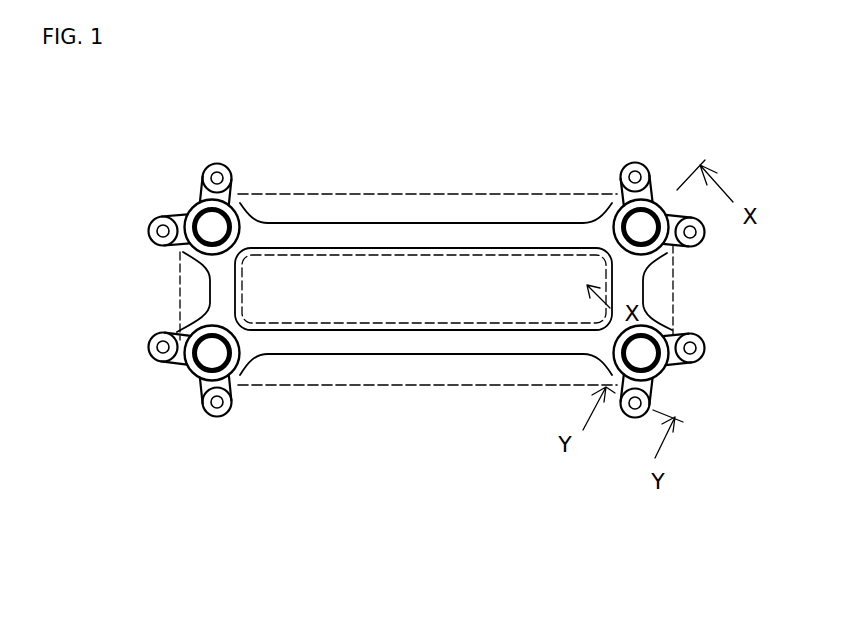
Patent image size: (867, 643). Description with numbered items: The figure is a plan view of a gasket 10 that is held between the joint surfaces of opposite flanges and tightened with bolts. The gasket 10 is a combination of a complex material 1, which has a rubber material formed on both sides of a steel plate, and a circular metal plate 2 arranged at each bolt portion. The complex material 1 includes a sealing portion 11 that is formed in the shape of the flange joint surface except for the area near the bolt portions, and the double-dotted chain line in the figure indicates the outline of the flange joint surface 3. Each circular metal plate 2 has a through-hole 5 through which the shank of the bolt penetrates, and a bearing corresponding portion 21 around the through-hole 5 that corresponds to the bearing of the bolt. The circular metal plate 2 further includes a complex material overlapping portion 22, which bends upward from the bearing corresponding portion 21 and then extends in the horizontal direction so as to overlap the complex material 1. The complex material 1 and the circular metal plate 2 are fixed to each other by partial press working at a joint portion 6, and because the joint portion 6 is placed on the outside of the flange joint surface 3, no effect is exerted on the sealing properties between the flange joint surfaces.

The gasket 10 is at (610, 93).
The complex material 1 is at (223, 282).
The circular metal plate 2 is at (195, 193).
The flange joint surface 3 is at (372, 193).
The through-hole 5 is at (216, 224).
The joint portion 6 is at (210, 415).
The sealing portion 11 is at (544, 355).
The bearing corresponding portion 21 is at (180, 382).
The complex material overlapping portion 22 is at (225, 415).